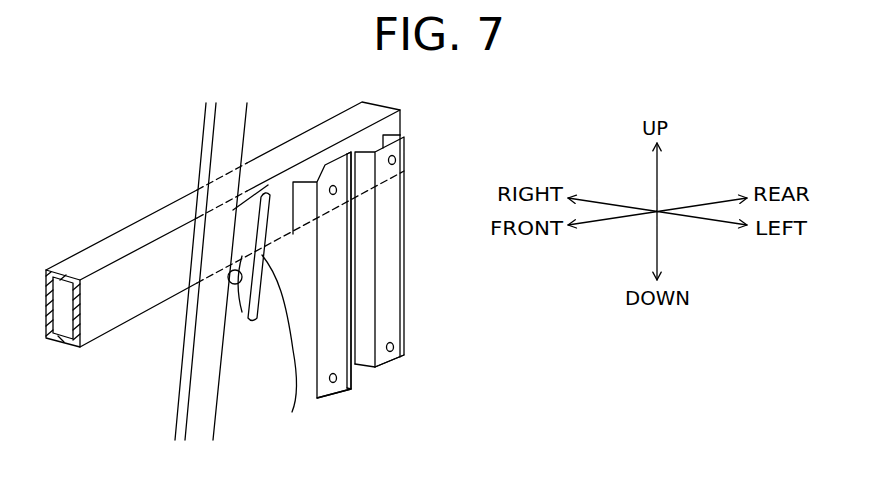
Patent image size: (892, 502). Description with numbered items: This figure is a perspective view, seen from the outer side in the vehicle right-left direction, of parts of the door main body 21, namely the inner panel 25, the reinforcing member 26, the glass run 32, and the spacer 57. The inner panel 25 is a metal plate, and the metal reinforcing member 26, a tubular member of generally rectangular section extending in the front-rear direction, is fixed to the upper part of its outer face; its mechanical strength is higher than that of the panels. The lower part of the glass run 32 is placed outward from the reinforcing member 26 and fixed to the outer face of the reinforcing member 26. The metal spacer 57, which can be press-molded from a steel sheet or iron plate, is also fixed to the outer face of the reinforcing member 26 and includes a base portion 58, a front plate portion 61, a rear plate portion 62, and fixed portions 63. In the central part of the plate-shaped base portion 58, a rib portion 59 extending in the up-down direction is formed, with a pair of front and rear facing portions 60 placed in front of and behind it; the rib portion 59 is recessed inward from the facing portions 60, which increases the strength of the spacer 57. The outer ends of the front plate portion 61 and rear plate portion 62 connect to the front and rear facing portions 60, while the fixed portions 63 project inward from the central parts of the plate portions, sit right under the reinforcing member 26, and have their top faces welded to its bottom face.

The door main body 21 is at (140, 165).
The inner panel 25 is at (136, 372).
The reinforcing member 26 is at (97, 326).
The glass run 32 is at (197, 426).
The spacer 57 is at (330, 407).
The base portion 58 is at (404, 190).
The rib portion 59 is at (348, 368).
The facing portion 60 is at (404, 328).
The front plate portion 61 is at (294, 351).
The rear plate portion 62 is at (400, 136).
The fixed portion 63 is at (278, 240).